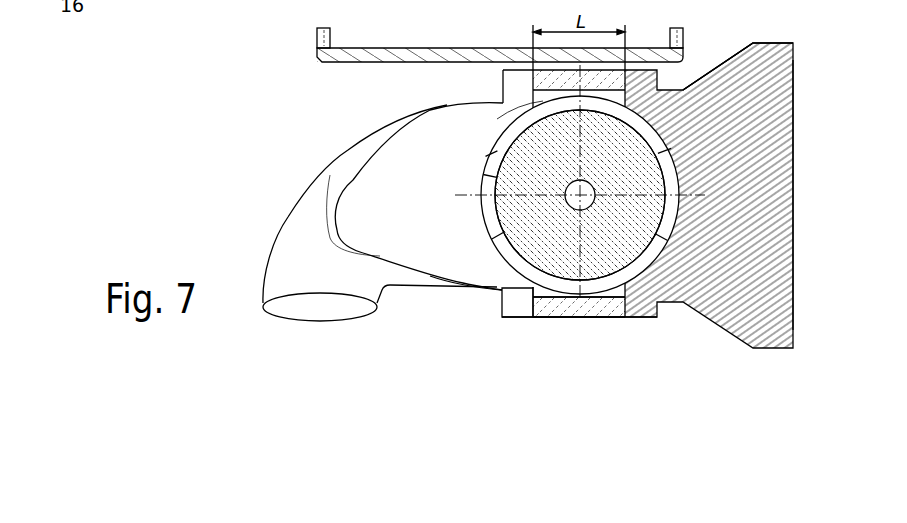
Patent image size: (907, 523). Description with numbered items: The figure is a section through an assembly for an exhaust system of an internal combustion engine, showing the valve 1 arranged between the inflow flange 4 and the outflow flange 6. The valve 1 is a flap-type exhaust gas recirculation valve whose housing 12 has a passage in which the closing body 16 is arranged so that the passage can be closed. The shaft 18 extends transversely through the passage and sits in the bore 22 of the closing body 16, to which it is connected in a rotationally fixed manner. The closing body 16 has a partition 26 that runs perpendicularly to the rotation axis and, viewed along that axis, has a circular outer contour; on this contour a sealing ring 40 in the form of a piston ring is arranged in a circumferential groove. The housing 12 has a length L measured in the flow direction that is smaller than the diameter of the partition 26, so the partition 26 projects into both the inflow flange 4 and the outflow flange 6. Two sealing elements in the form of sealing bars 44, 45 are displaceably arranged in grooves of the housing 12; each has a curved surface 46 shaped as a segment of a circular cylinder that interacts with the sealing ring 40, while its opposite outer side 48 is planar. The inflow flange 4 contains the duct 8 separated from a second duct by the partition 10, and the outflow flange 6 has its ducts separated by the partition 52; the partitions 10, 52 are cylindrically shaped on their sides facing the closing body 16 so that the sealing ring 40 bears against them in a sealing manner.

The valve 1 is at (541, 318).
The inflow flange 4 is at (299, 178).
The outflow flange 6 is at (794, 299).
The first duct 8 is at (345, 312).
The partition 10 is at (425, 150).
The housing 12 is at (568, 308).
The closing body 16 is at (500, 45).
The shaft 18 is at (572, 205).
The bore 22 is at (596, 201).
The partition 26 is at (630, 148).
The sealing ring 40 is at (667, 160).
The sealing bar 44 is at (607, 293).
The sealing bar 45 is at (543, 97).
The curved surface 46 is at (543, 104).
The outer side 48 is at (555, 91).
The partition 52 is at (763, 150).